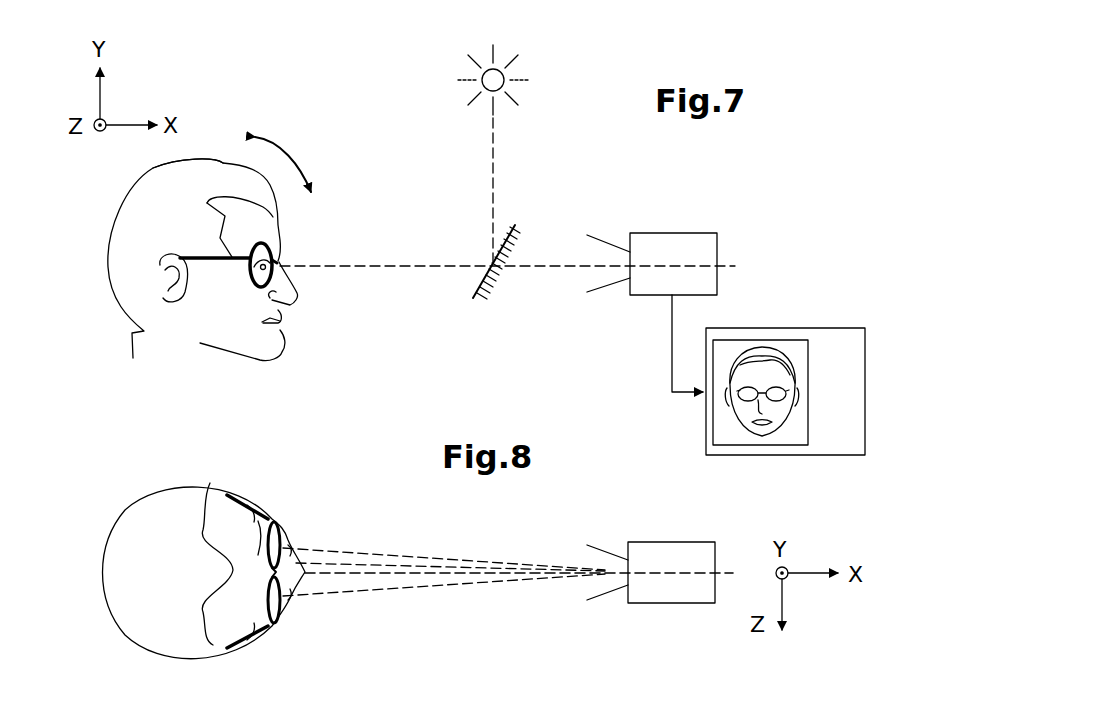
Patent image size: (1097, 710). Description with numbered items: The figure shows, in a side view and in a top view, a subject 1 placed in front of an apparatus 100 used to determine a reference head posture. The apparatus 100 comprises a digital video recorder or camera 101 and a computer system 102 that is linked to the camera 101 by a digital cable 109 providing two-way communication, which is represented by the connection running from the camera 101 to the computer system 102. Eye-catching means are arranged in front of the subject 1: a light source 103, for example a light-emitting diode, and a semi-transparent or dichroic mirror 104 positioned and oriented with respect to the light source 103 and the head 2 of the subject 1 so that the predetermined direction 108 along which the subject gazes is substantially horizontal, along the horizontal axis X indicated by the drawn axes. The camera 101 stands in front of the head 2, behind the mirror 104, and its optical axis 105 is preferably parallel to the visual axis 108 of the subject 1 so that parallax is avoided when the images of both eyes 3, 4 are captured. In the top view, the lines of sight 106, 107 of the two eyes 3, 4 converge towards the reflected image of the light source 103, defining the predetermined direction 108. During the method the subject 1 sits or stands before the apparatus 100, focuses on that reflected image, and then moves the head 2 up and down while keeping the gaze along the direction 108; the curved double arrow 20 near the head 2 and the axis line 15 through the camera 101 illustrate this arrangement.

In FIG. 7, the subject 1 is at (228, 366).
In FIG. 7, the head 2 is at (218, 163).
In FIG. 8, the head 2 is at (122, 637).
In FIG. 7, the eye 3 is at (278, 283).
In FIG. 8, the eye 3 is at (257, 600).
In FIG. 8, the eye 4 is at (254, 524).
In FIG. 7, the optical axis of camera 15 is at (555, 266).
In FIG. 7, the head movement 20 is at (287, 148).
In FIG. 7, the apparatus 100 is at (776, 193).
In FIG. 7, the digital video recorder 101 is at (668, 233).
In FIG. 8, the digital video recorder 101 is at (650, 542).
In FIG. 7, the computer system 102 is at (846, 328).
In FIG. 7, the light source 103 is at (497, 68).
In FIG. 7, the semi-transparent or dichroic mirror 104 is at (471, 289).
In FIG. 8, the optical axis 105 is at (461, 565).
In FIG. 8, the line of sight 106 is at (320, 592).
In FIG. 8, the line of sight 107 is at (341, 548).
In FIG. 7, the predetermined direction 108 is at (405, 264).
In FIG. 8, the predetermined direction 108 is at (398, 576).
In FIG. 7, the digital cable 109 is at (672, 322).